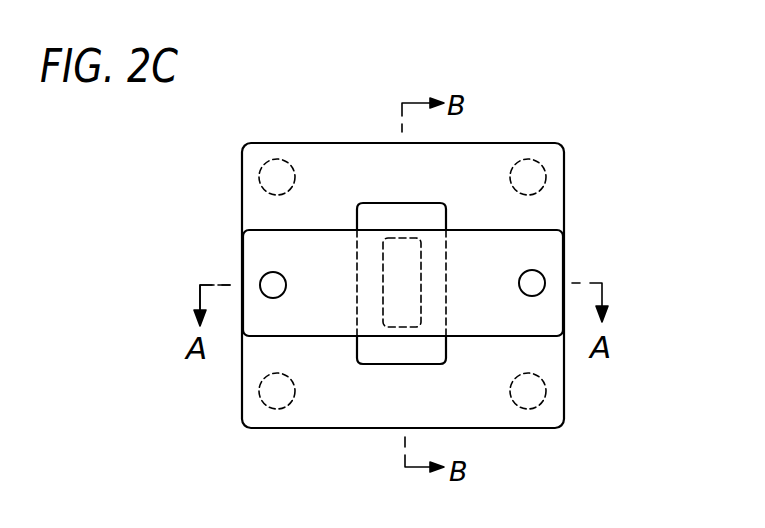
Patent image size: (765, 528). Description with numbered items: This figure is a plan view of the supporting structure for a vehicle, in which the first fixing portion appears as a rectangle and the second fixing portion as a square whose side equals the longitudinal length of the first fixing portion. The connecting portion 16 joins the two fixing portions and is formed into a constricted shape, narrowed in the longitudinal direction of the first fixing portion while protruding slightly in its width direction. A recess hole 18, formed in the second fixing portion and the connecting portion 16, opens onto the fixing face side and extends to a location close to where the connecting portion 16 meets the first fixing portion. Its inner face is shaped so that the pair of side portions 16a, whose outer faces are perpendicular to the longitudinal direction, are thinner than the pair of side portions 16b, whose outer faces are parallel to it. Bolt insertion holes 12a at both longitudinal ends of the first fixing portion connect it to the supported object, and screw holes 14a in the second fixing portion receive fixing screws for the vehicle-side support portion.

The bolt insertion hole 12a is at (533, 283).
The screw hole 14a is at (530, 392).
The connecting portion 16 is at (427, 203).
The side portion perpendicular to the longitudinal direction 16a is at (372, 257).
The side portion parallel to the longitudinal direction 16b is at (390, 207).
The recess hole 18 is at (393, 313).